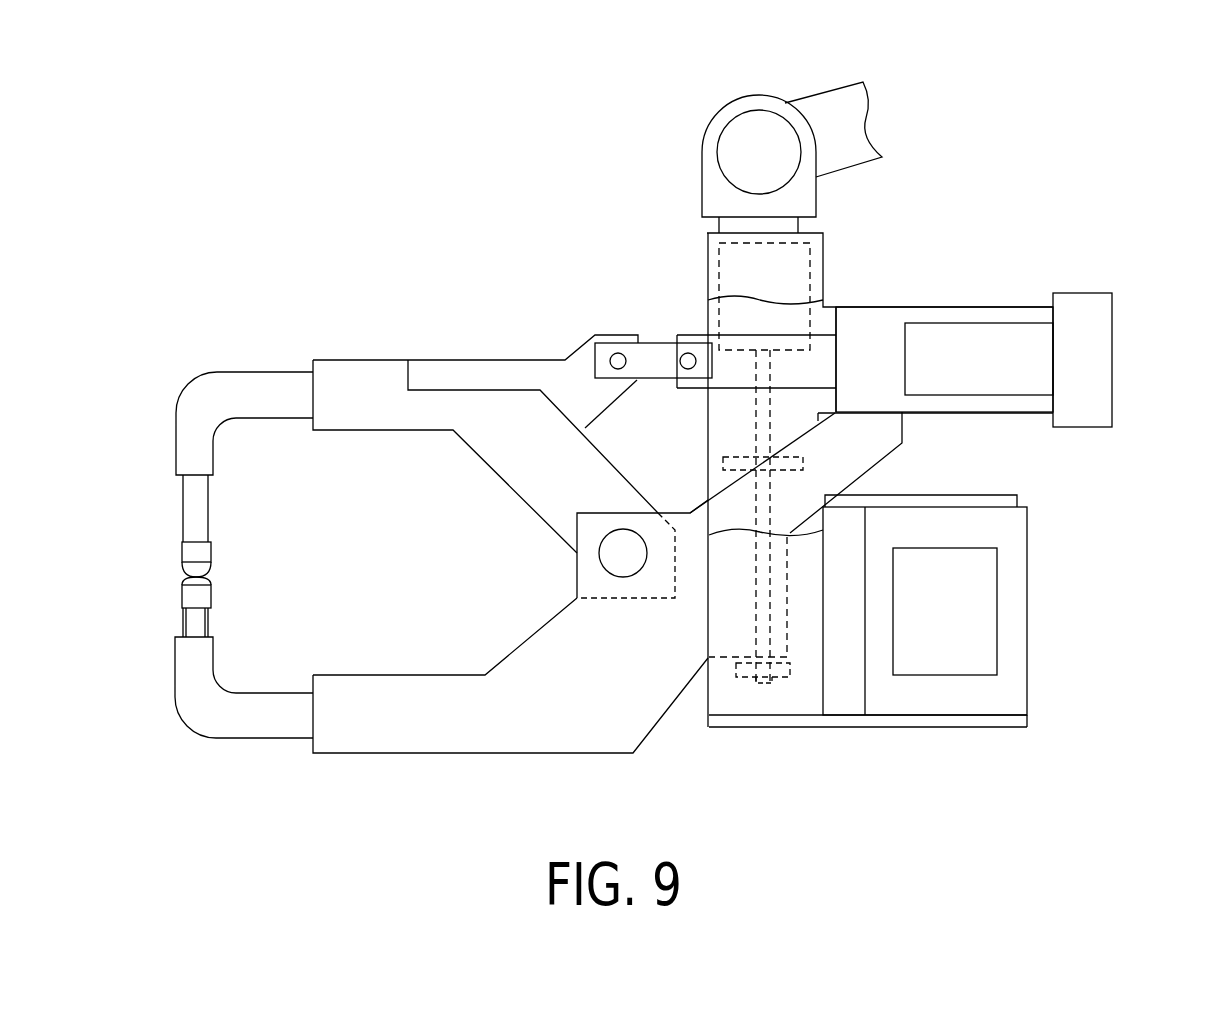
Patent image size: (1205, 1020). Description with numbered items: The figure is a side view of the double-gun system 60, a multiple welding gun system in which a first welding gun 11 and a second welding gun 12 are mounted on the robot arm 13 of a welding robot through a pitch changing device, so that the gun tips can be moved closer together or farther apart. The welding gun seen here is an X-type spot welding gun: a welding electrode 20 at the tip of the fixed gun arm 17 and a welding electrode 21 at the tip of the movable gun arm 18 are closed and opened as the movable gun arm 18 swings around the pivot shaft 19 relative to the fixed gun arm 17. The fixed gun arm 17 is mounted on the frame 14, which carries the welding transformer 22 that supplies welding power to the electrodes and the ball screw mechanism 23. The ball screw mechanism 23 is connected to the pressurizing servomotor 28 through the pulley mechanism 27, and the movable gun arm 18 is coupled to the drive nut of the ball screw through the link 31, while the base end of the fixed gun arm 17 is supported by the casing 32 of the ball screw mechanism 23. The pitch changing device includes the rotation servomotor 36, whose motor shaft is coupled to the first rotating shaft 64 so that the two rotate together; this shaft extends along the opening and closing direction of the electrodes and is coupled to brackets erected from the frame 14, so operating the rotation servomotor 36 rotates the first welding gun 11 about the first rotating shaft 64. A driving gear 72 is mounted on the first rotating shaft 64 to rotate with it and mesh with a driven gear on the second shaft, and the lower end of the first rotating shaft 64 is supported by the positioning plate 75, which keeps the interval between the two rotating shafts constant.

The double-gun system 60 is at (512, 118).
The first welding gun 11 is at (621, 428).
The second welding gun 12 is at (1032, 241).
The robot arm 13 is at (833, 90).
The frame 14 is at (742, 708).
The fixed gun arm 17 is at (412, 755).
The movable gun arm 18 is at (363, 360).
The pivot shaft 19 is at (612, 558).
The welding electrode 20 is at (182, 596).
The welding electrode 21 is at (182, 550).
The welding transformer 22 is at (1027, 613).
The ball screw mechanism 23 is at (987, 307).
The pulley mechanism 27 is at (1112, 375).
The pressurizing servomotor 28 is at (1007, 395).
The link 31 is at (652, 343).
The casing 32 is at (945, 413).
The rotation servomotor 36 is at (810, 282).
The first rotating shaft 64 is at (752, 421).
The driving gear 72 is at (723, 463).
The positioning plate 75 is at (783, 677).